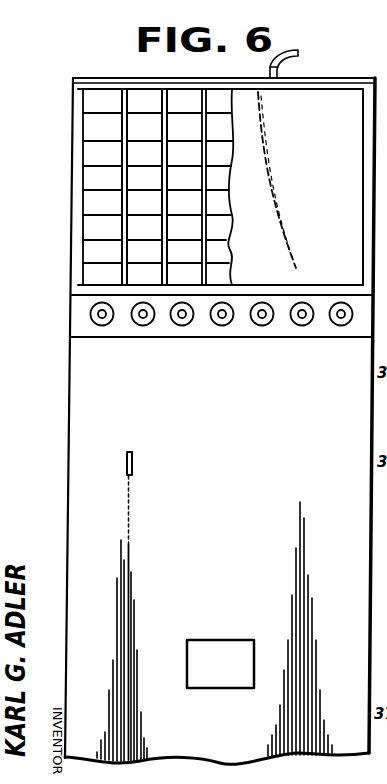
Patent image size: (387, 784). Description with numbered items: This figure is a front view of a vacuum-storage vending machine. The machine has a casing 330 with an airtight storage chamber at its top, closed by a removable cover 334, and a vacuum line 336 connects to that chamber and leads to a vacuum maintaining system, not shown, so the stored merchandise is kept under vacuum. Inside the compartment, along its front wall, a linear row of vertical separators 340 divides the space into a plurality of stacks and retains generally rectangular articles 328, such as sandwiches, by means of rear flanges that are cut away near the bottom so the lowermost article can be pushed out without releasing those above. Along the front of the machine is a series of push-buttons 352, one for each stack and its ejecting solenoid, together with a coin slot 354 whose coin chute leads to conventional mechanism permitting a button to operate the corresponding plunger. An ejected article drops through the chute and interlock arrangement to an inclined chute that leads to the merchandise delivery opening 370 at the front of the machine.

The articles 328 is at (97, 179).
The casing 330 is at (68, 366).
The removable cover 334 is at (326, 78).
The vacuum line 336 is at (300, 52).
The vertical separators 340 is at (160, 97).
The push-buttons 352 is at (221, 319).
The coin slot 354 is at (134, 463).
The merchandise delivery opening 370 is at (228, 655).